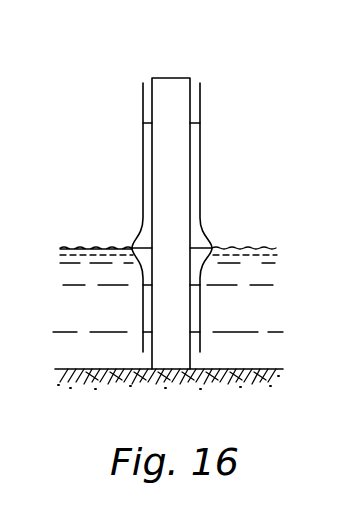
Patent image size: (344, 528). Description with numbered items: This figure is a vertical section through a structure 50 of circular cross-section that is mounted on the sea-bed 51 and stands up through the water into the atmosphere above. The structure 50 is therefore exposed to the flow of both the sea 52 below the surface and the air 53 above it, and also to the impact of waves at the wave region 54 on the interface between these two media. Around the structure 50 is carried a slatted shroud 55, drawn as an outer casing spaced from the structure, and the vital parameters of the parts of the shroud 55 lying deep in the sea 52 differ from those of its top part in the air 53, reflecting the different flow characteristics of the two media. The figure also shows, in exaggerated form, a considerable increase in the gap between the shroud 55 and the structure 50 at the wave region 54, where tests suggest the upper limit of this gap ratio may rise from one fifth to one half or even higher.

The structure 50 is at (181, 101).
The slatted shroud 55 is at (143, 97).
The wave region 54 is at (221, 242).
The air 53 is at (277, 135).
The sea 52 is at (278, 315).
The sea-bed 51 is at (100, 368).